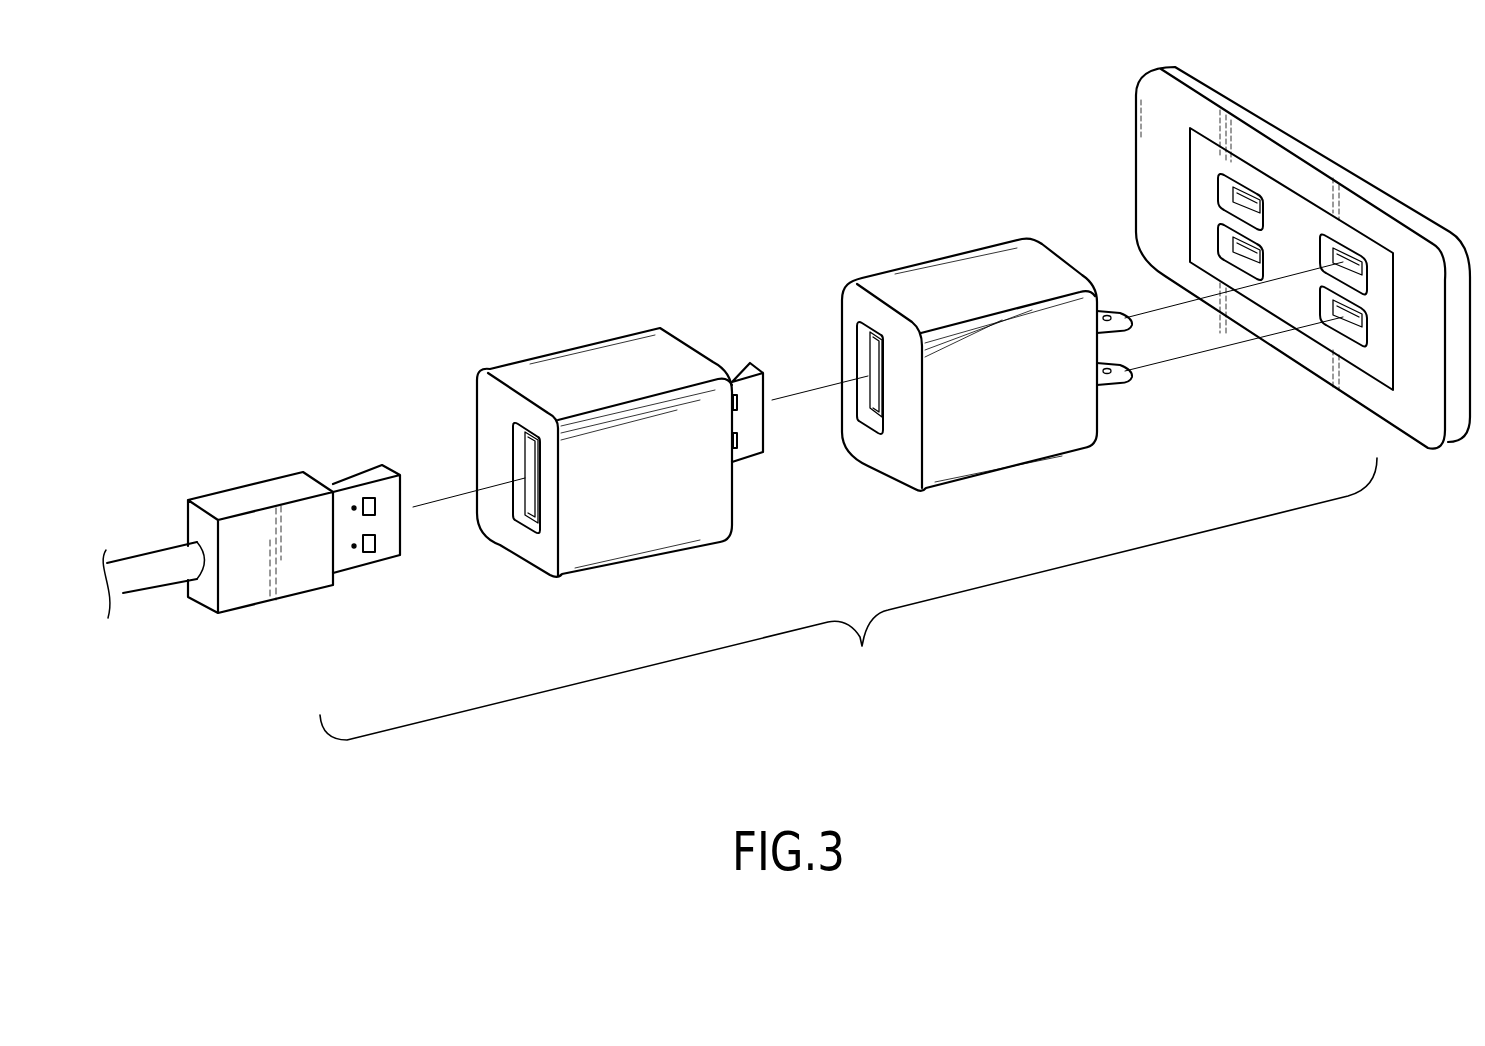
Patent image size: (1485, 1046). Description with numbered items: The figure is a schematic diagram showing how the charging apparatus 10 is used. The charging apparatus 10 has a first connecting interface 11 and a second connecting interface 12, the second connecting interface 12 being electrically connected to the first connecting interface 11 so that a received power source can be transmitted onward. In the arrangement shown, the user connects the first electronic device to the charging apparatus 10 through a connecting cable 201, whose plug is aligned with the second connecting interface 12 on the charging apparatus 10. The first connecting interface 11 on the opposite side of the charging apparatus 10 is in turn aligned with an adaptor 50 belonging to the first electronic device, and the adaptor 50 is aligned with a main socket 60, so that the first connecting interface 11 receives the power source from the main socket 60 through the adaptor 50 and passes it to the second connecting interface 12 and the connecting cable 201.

The connecting cable 201 is at (268, 492).
The charging apparatus 10 is at (592, 340).
The first connecting interface 11 is at (732, 360).
The second connecting interface 12 is at (515, 465).
The adaptor 50 is at (954, 247).
The main socket 60 is at (1271, 126).